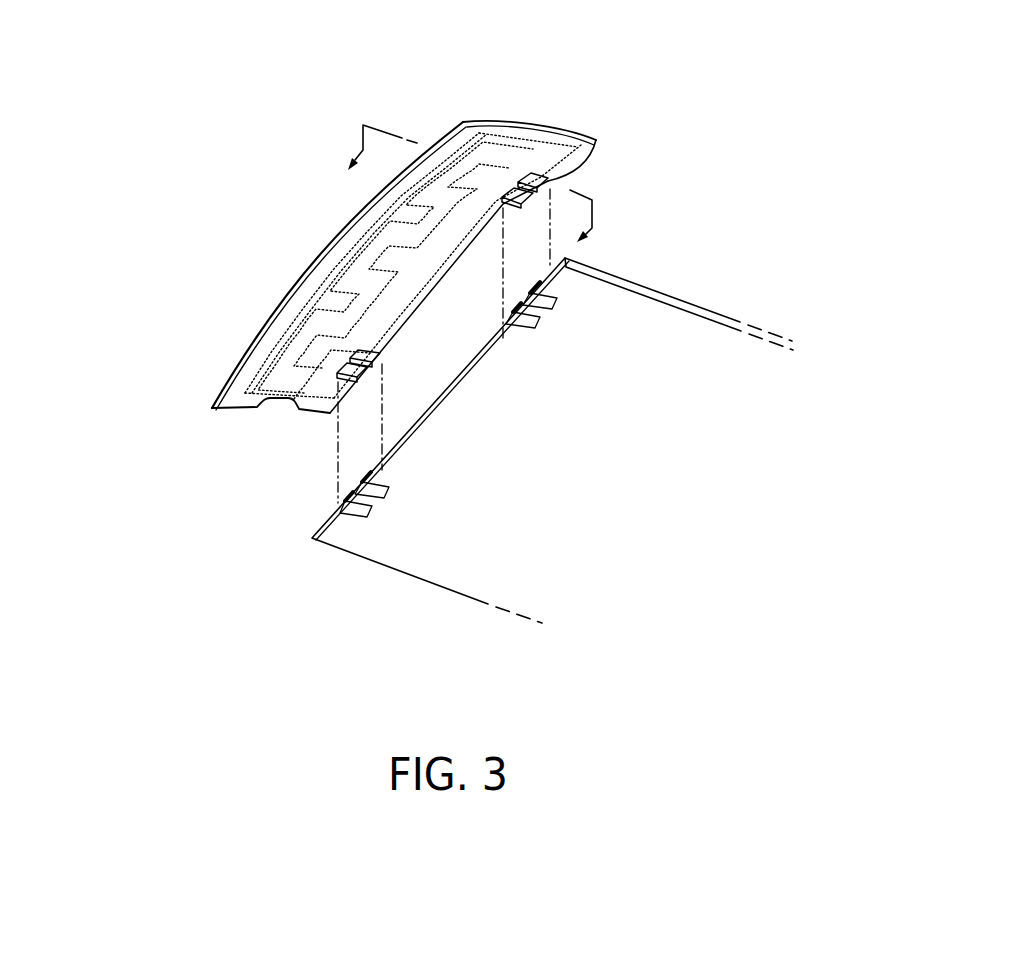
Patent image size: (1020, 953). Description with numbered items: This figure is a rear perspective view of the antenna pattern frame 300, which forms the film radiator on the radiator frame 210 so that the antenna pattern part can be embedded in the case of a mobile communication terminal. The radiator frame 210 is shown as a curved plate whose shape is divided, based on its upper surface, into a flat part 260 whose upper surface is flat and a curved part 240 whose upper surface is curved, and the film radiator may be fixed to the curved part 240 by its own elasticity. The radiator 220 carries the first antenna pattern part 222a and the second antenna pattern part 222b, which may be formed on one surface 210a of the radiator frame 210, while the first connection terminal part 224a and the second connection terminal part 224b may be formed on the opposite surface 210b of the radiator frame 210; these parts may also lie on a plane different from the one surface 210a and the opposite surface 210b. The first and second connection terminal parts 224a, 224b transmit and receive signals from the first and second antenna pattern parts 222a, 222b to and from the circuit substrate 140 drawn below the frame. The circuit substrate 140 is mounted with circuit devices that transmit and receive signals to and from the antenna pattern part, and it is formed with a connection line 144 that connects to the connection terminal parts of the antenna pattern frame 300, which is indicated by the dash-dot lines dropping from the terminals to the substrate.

The antenna pattern frame 300 is at (268, 35).
The circuit substrate 140 is at (390, 558).
The connection line 144 is at (573, 270).
The radiator frame 210 is at (263, 541).
The one surface of the radiator frame 210a is at (352, 232).
The opposite surface of the radiator frame 210b is at (328, 262).
The radiator 220 is at (296, 327).
The first antenna pattern part 222a is at (440, 172).
The second antenna pattern part 222b is at (468, 220).
The first connection terminal part 224a is at (549, 183).
The second connection terminal part 224b is at (350, 357).
The curved part 240 is at (243, 404).
The flat part 260 is at (323, 380).